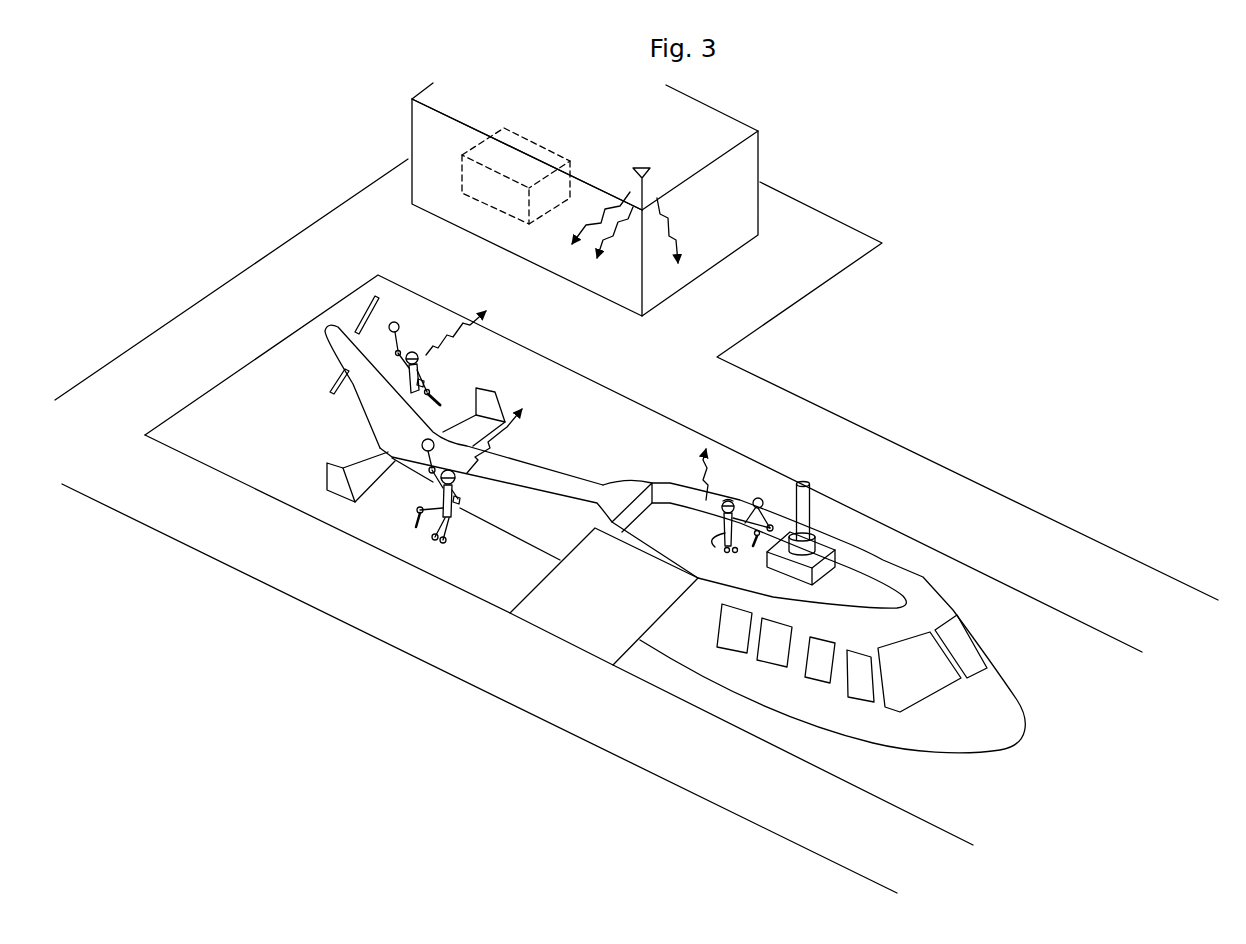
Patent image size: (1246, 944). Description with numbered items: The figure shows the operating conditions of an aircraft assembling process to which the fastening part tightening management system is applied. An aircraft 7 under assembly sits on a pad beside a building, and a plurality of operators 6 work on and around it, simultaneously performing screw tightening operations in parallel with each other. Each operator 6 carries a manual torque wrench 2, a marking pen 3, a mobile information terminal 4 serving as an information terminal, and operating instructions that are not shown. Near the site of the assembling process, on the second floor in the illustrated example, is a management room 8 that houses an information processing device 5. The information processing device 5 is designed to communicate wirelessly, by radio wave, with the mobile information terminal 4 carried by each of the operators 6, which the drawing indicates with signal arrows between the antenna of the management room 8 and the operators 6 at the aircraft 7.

The manual torque wrench 2 is at (402, 338).
The marking pen 3 is at (442, 400).
The mobile information terminal 4 is at (420, 378).
The information processing device 5 is at (460, 175).
The operator 6 is at (422, 383).
The aircraft 7 is at (1007, 703).
The management room 8 is at (747, 165).